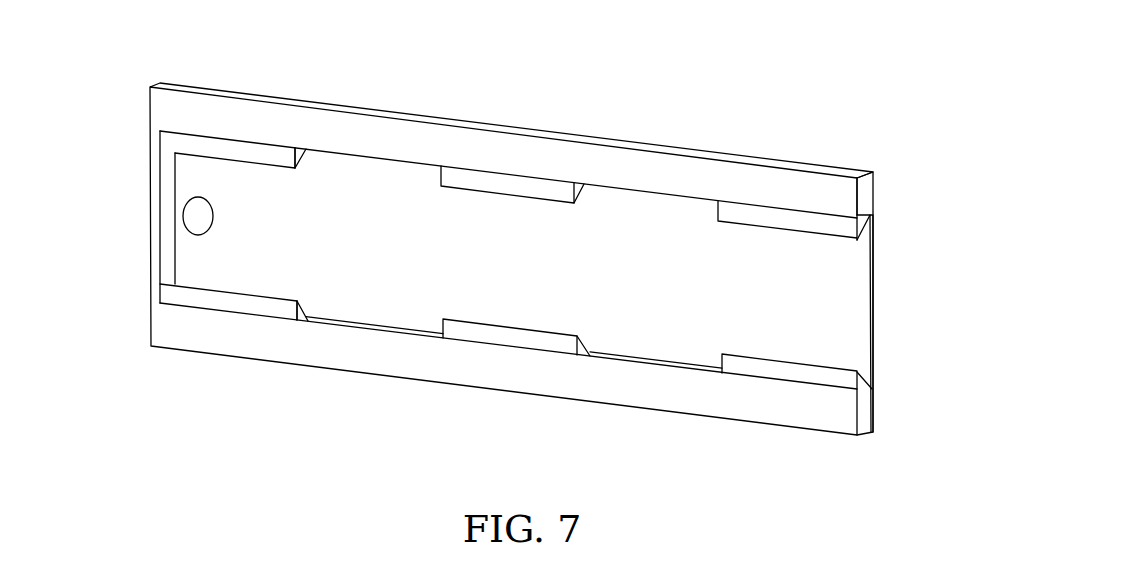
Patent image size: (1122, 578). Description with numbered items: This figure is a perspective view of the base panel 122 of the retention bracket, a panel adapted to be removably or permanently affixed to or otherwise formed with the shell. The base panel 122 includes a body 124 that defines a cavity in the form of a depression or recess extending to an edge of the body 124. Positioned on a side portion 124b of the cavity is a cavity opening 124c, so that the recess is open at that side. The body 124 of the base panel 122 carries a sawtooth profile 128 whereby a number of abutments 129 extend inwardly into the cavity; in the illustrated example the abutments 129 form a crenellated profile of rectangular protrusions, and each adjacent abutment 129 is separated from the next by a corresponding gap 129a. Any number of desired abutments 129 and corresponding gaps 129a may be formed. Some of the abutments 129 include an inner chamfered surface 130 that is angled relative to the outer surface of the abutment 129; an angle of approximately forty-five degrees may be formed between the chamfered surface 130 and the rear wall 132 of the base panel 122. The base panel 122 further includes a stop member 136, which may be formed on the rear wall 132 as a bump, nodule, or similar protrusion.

The base panel 122 is at (185, 87).
The body 124 is at (160, 112).
The side portion 124b is at (886, 197).
The cavity opening 124c is at (886, 248).
The sawtooth profile 128 is at (310, 186).
The abutment 129 is at (233, 152).
The gap 129a is at (352, 172).
The chamfered surface 130 is at (305, 152).
The rear wall 132 is at (533, 290).
The stop member 136 is at (191, 217).